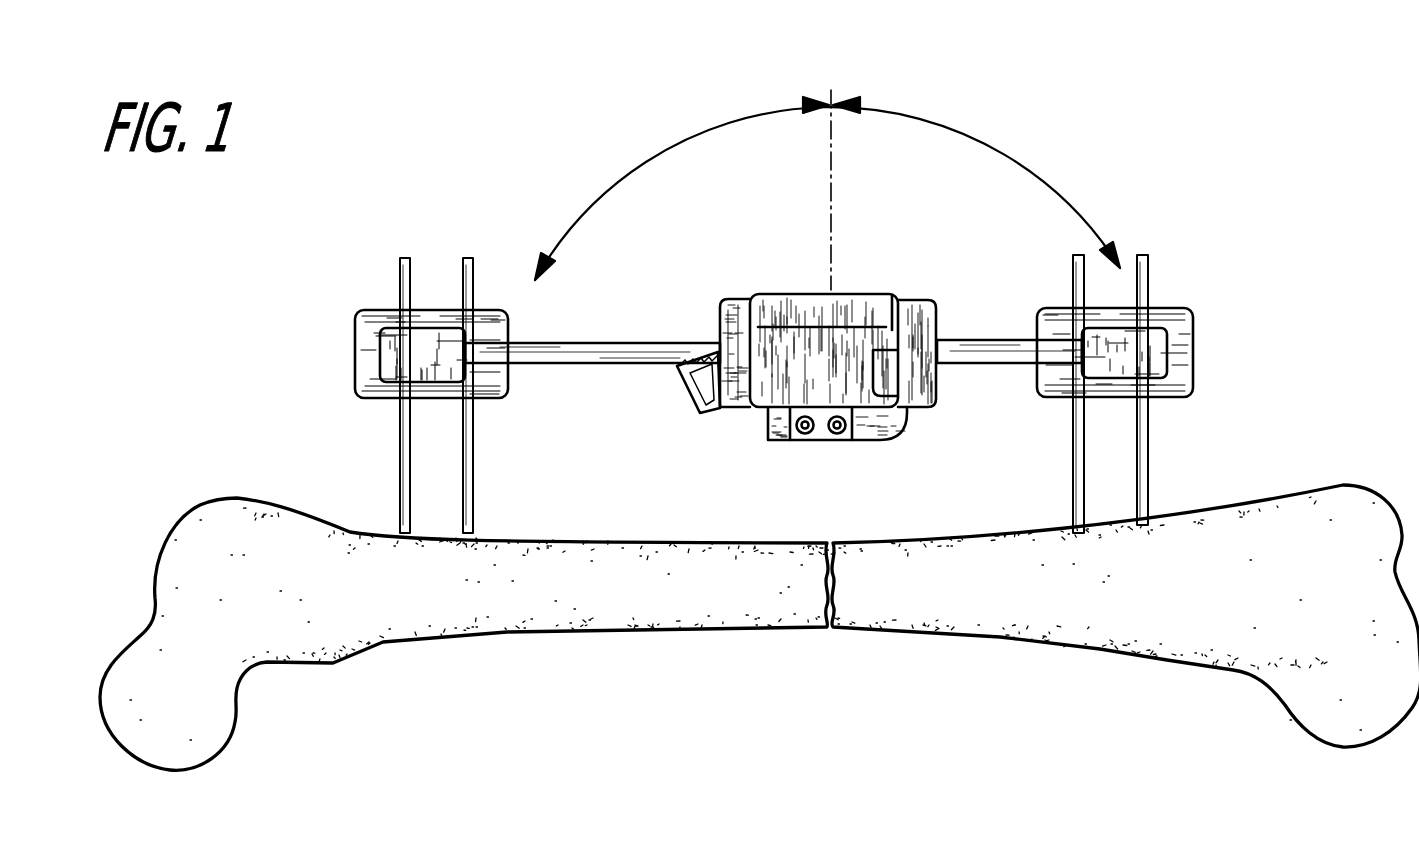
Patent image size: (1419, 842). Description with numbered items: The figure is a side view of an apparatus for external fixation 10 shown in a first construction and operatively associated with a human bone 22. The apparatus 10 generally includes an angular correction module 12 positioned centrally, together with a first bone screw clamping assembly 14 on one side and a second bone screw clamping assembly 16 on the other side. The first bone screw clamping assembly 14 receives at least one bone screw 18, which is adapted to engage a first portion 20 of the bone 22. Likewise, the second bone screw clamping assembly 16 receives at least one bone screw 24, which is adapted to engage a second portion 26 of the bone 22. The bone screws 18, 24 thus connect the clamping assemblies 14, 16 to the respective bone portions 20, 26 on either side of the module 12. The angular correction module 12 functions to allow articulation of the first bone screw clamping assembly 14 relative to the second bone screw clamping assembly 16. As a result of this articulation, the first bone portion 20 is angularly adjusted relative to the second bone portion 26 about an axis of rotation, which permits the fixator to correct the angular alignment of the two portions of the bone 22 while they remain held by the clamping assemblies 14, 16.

The apparatus for external fixation 10 is at (1172, 228).
The angular correction module 12 is at (880, 292).
The first bone screw clamping assembly 14 is at (378, 310).
The second bone screw clamping assembly 16 is at (1193, 322).
The bone screw 18 is at (474, 468).
The first portion of bone 20 is at (432, 533).
The bone 22 is at (940, 637).
The bone screw 24 is at (1150, 448).
The second portion of bone 26 is at (1105, 530).